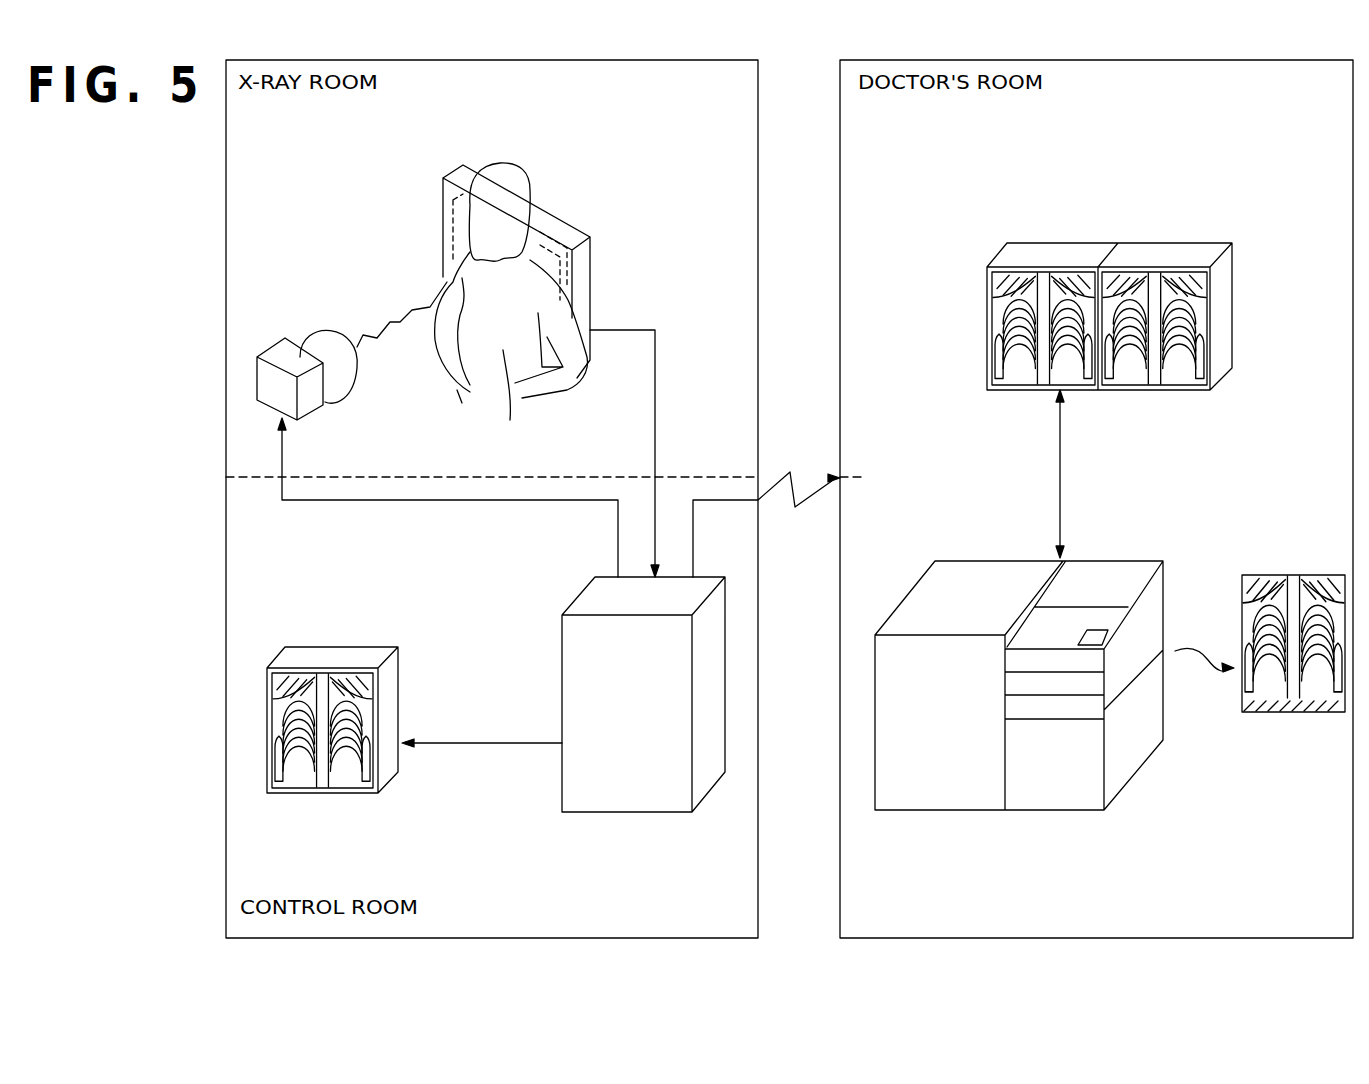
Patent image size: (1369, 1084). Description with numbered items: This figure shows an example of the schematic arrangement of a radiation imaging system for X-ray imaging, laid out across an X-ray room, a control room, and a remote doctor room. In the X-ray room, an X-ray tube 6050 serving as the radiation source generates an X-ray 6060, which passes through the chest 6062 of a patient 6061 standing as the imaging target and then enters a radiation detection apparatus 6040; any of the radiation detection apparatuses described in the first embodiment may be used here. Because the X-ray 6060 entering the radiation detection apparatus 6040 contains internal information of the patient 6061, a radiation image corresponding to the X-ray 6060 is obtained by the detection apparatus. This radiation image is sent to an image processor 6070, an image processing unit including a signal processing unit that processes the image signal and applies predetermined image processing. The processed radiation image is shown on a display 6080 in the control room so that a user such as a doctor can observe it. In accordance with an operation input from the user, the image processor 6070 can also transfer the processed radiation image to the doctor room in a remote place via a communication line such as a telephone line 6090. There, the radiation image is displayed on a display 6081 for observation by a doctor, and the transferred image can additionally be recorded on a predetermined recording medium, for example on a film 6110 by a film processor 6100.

The radiation detection apparatus 6040 is at (555, 238).
The X-ray tube 6050 is at (268, 347).
The X-ray 6060 is at (357, 347).
The patient 6061 is at (503, 167).
The chest 6062 is at (510, 420).
The image processor 6070 is at (560, 773).
The display 6080 is at (400, 687).
The display 6081 is at (1022, 250).
The telephone line 6090 is at (797, 487).
The film processor 6100 is at (979, 560).
The film 6110 is at (1295, 575).